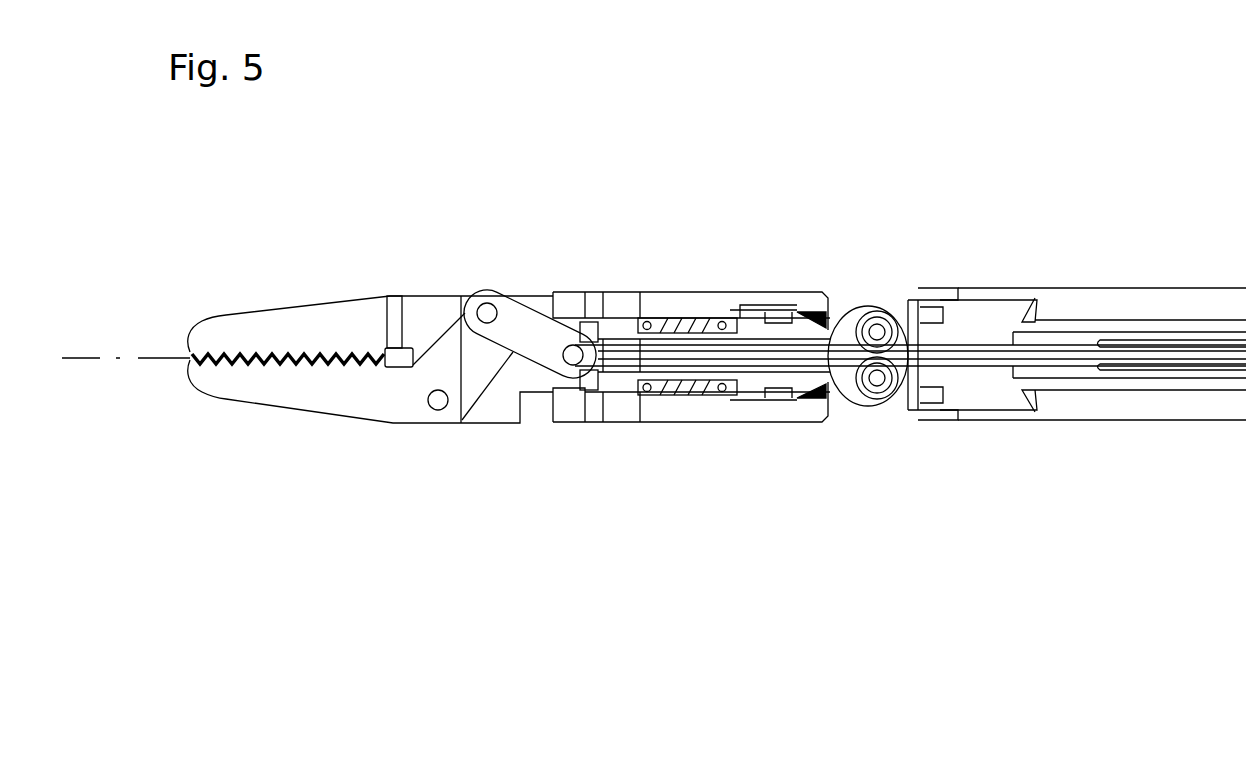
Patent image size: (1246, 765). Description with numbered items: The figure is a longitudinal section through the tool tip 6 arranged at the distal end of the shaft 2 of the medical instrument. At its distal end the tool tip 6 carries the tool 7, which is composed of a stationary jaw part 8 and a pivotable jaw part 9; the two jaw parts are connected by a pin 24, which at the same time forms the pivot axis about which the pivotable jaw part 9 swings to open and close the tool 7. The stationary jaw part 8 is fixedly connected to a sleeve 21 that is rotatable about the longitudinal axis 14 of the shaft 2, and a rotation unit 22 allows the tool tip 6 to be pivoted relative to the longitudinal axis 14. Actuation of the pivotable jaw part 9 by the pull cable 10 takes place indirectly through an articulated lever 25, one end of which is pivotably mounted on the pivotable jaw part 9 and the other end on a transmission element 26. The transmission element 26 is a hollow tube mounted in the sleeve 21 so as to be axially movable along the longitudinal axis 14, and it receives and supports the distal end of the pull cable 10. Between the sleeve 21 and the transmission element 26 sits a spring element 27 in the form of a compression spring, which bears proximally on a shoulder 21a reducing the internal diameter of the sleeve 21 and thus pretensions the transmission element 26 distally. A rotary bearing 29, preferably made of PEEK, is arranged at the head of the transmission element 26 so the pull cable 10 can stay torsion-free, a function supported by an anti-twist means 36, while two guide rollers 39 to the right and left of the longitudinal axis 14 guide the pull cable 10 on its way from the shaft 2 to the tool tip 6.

The shaft 2 is at (1173, 303).
The tool tip 6 is at (764, 236).
The tool 7 is at (262, 228).
The stationary jaw part 8 is at (250, 320).
The pivotable jaw part 9 is at (300, 388).
The pull cable 10 is at (665, 355).
The longitudinal axis 14 is at (90, 360).
The sleeve 21 is at (592, 317).
The shoulder 21a is at (745, 325).
The rotation unit 22 is at (780, 413).
The pin 24 is at (438, 401).
The articulated lever 25 is at (516, 320).
The transmission element 26 is at (628, 387).
The spring element 27 is at (722, 390).
The rotary bearing 29 is at (622, 377).
The anti-twist means 36 is at (758, 318).
The guide rollers 39 is at (877, 332).